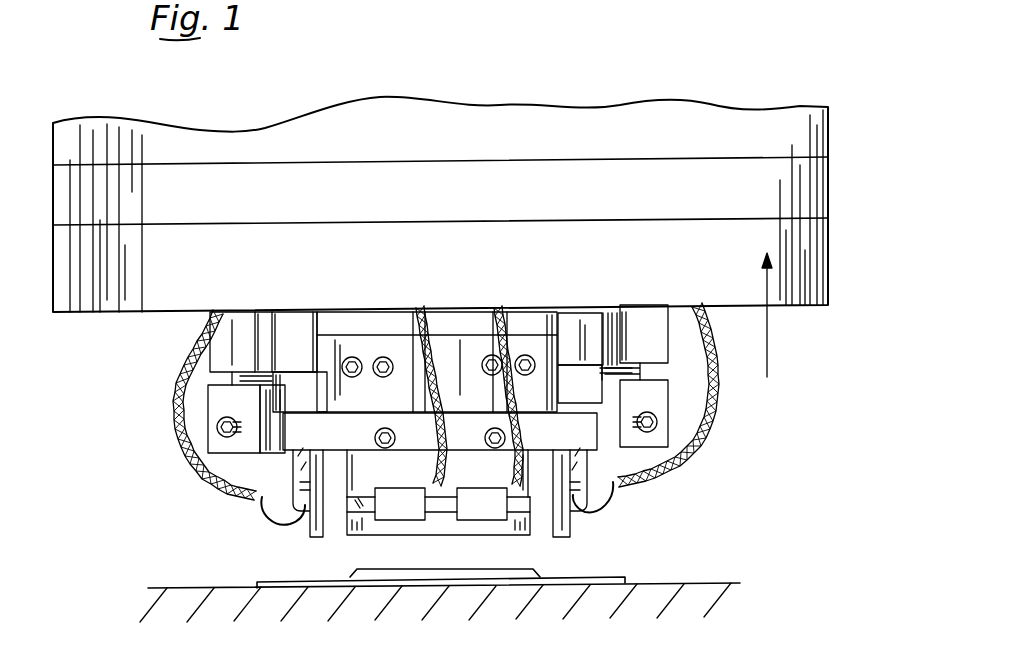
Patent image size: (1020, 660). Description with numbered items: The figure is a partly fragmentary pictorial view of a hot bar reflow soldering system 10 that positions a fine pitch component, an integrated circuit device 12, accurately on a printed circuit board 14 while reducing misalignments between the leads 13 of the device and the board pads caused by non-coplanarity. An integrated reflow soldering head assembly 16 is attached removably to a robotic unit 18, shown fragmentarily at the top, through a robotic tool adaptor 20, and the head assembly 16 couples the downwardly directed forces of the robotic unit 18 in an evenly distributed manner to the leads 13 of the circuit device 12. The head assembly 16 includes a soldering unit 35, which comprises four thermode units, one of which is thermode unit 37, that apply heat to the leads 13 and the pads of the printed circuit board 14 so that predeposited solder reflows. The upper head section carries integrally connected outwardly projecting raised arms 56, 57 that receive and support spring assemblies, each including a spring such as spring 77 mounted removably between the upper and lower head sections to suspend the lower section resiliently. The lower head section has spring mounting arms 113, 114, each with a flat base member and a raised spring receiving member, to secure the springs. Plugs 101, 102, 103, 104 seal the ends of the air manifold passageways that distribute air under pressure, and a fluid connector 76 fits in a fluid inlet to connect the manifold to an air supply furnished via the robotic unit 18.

The hot bar reflow soldering system 10 is at (107, 521).
The integrated circuit device 12 is at (460, 568).
The leads 13 is at (583, 577).
The printed circuit board 14 is at (698, 583).
The integrated reflow soldering head assembly 16 is at (782, 415).
The robotic unit 18 is at (793, 123).
The robotic tool adaptor 20 is at (838, 213).
The soldering unit 35 is at (250, 532).
The thermode unit 37 is at (347, 548).
The raised arm 56 is at (720, 353).
The raised arm 57 is at (178, 343).
The fluid connector 76 is at (638, 378).
The spring 77 is at (245, 383).
The plug 101 is at (345, 345).
The plug 102 is at (374, 345).
The plug 103 is at (480, 345).
The plug 104 is at (519, 345).
The spring mounting arm 113 is at (677, 425).
The spring mounting arm 114 is at (203, 435).